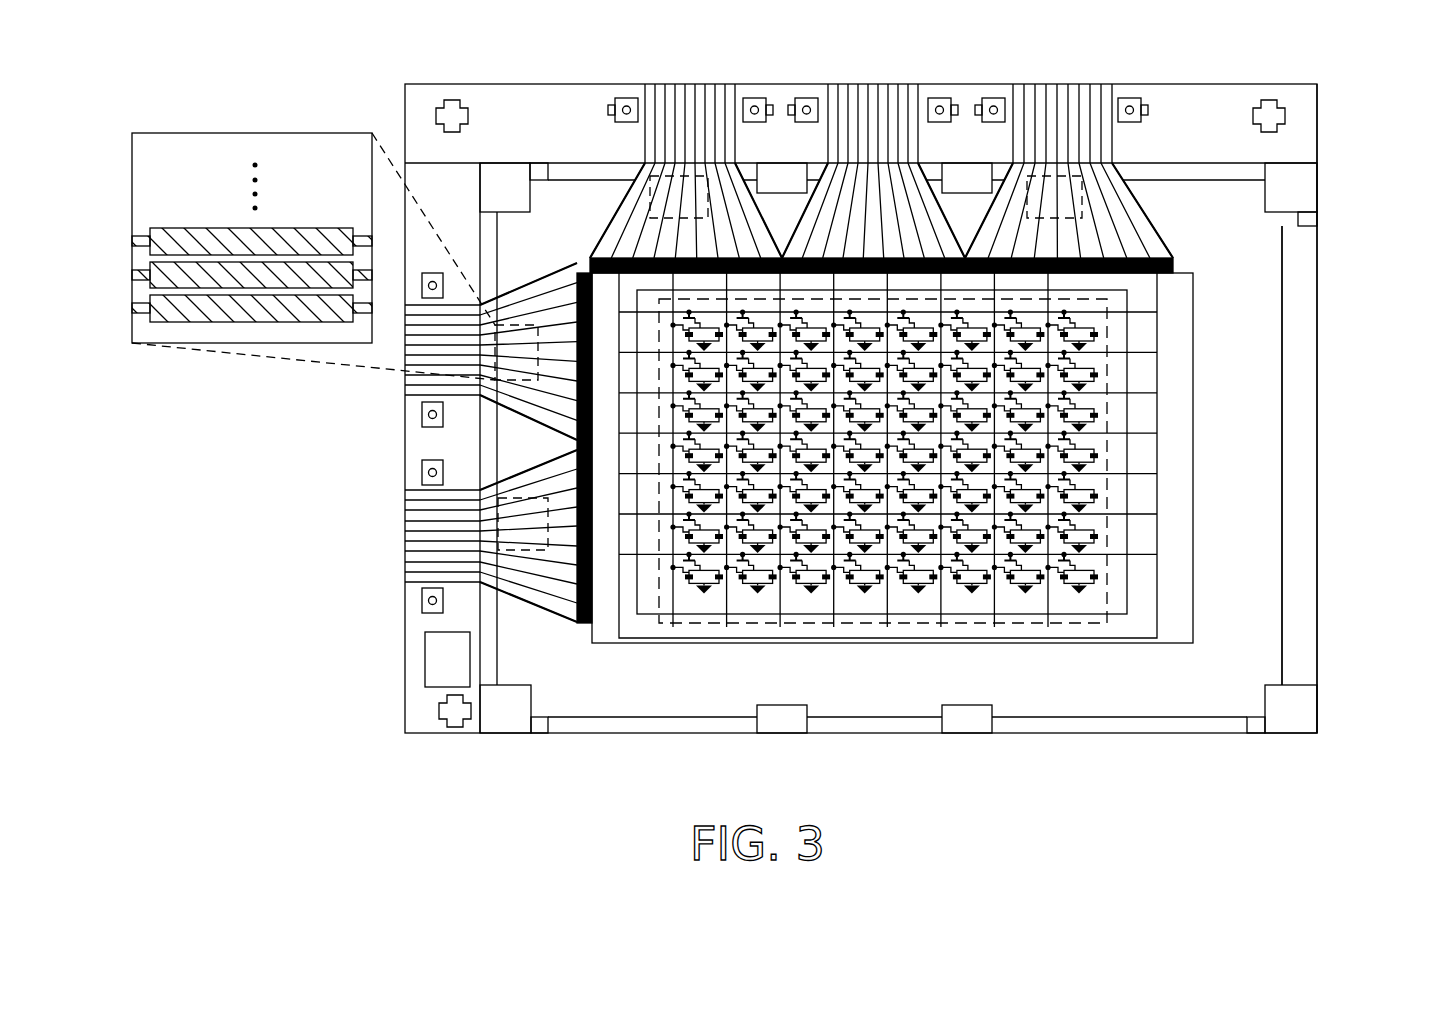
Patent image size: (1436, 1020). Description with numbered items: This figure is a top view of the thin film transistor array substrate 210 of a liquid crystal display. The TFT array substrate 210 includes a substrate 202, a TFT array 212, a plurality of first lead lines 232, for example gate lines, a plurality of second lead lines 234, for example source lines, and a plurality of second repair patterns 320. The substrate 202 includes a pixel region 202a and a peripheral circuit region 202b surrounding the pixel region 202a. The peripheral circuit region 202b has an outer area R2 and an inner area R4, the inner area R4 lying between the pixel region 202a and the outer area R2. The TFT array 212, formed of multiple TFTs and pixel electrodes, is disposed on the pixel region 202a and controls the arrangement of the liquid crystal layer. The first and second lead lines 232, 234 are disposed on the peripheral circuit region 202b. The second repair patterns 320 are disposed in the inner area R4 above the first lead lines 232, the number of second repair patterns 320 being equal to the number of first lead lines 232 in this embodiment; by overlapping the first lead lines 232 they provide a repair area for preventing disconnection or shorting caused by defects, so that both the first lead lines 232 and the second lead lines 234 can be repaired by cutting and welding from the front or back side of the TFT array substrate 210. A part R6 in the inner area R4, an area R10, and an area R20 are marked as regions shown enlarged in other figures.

The TFT array substrate 210 is at (1343, 788).
The substrate 202 is at (1298, 405).
The pixel region 202a is at (992, 458).
The peripheral circuit region 202b is at (1365, 112).
The TFT array 212 is at (1100, 447).
The first lead lines 232 is at (356, 378).
The second lead lines 234 is at (748, 216).
The second repair patterns 320 is at (200, 315).
The outer area R2 is at (1322, 83).
The inner area R4 is at (921, 407).
The part of the inner area R6 is at (1052, 174).
The area R10 is at (677, 174).
The area R20 is at (493, 526).